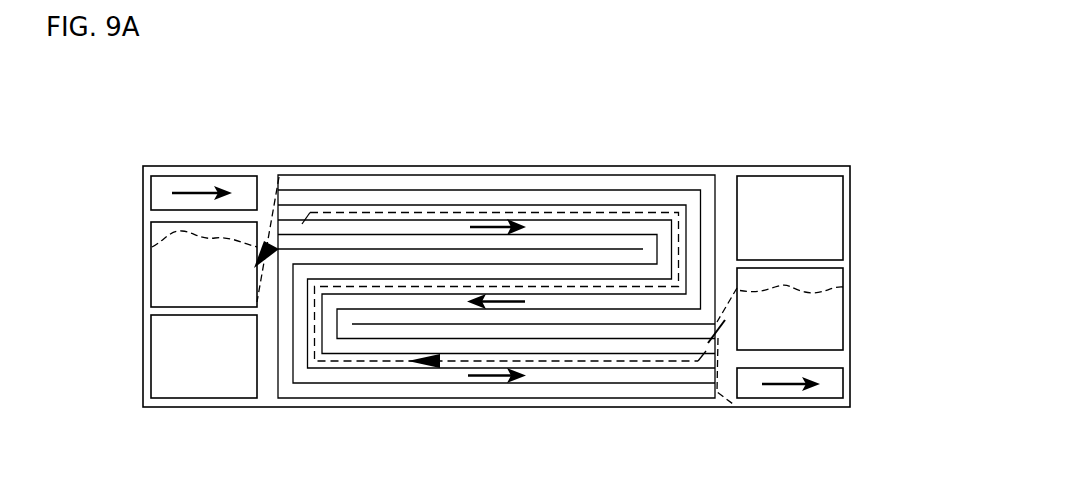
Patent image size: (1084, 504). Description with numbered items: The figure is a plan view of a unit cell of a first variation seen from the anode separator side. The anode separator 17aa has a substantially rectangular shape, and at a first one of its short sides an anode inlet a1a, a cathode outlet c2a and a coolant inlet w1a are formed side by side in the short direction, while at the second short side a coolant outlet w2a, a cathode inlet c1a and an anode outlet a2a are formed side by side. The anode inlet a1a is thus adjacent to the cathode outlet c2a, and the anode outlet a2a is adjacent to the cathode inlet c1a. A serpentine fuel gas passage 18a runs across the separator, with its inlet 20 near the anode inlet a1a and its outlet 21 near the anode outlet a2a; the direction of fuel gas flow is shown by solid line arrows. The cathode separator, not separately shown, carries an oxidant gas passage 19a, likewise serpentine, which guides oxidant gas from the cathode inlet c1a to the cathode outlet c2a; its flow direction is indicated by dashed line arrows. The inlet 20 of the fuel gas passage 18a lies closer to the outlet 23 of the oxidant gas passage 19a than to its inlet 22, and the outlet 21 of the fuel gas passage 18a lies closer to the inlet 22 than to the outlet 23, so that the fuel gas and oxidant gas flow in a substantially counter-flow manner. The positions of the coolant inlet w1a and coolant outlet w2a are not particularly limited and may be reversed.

The anode separator 17aa is at (853, 167).
The anode inlet a1a is at (152, 193).
The anode outlet a2a is at (835, 383).
The cathode inlet c1a is at (835, 311).
The cathode outlet c2a is at (152, 271).
The coolant inlet w1a is at (152, 367).
The coolant outlet w2a is at (835, 224).
The fuel gas passage 18a is at (408, 190).
The oxidant gas passage 19a is at (546, 393).
The inlet of the fuel gas passage 20 is at (277, 248).
The outlet of the fuel gas passage 21 is at (715, 323).
The inlet of the oxidant gas passage 22 is at (843, 287).
The outlet of the oxidant gas passage 23 is at (151, 241).